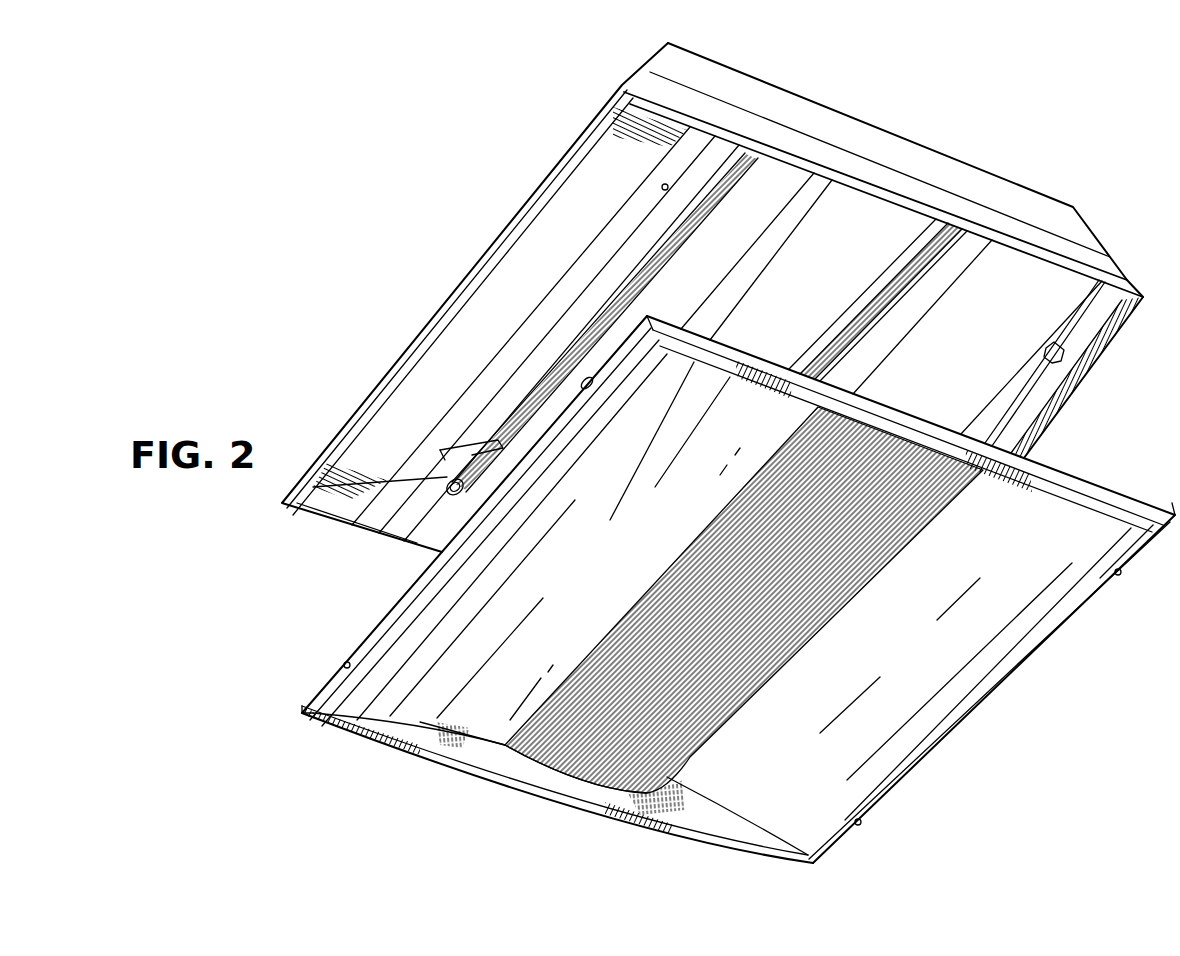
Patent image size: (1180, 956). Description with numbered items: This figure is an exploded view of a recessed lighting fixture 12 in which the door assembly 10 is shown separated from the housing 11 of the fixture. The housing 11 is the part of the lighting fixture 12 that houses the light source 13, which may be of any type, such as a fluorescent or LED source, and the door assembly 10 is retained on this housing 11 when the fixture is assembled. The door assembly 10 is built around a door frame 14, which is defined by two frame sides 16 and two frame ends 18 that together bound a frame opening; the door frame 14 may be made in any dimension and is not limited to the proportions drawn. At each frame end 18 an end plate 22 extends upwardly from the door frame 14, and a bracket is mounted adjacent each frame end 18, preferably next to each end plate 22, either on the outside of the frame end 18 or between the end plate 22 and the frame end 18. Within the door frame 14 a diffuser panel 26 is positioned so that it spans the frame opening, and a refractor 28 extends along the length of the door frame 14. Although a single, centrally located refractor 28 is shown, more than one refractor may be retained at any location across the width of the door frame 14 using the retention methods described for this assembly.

The door assembly 10 is at (958, 821).
The housing 11 is at (745, 95).
The lighting fixture 12 is at (418, 96).
The light source 13 is at (500, 440).
The door frame 14 is at (360, 740).
The frame sides 16 is at (395, 618).
The frame ends 18 is at (1080, 493).
The end plate 22 is at (443, 747).
The diffuser panel 26 is at (880, 753).
The refractor 28 is at (667, 750).